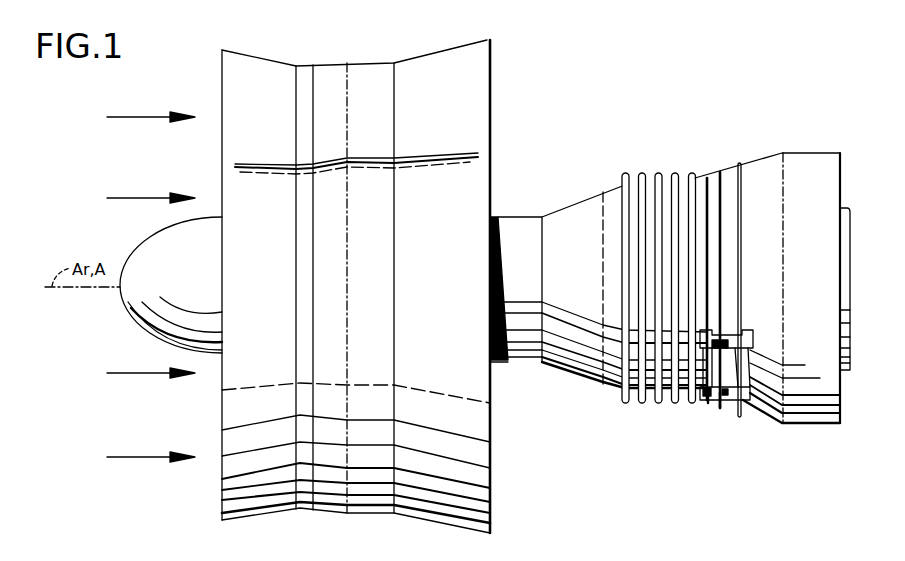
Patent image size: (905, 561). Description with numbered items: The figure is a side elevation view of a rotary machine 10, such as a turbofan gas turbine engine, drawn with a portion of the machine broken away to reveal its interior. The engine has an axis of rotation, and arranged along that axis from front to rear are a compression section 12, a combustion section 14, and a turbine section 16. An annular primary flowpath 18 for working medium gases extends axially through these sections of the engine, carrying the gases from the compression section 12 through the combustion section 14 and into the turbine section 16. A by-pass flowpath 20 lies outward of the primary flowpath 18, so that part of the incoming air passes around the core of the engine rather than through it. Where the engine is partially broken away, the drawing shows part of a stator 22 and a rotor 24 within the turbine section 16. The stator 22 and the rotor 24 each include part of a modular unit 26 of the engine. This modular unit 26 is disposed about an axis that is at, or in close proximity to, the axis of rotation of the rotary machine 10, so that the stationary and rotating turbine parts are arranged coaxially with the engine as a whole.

The rotary machine 10 is at (625, 122).
The compression section 12 is at (473, 198).
The combustion section 14 is at (583, 197).
The turbine section 16 is at (707, 177).
The primary flowpath 18 is at (108, 198).
The by-pass flowpath 20 is at (702, 395).
The stator 22 is at (707, 398).
The rotor 24 is at (740, 338).
The modular unit 26 is at (747, 413).